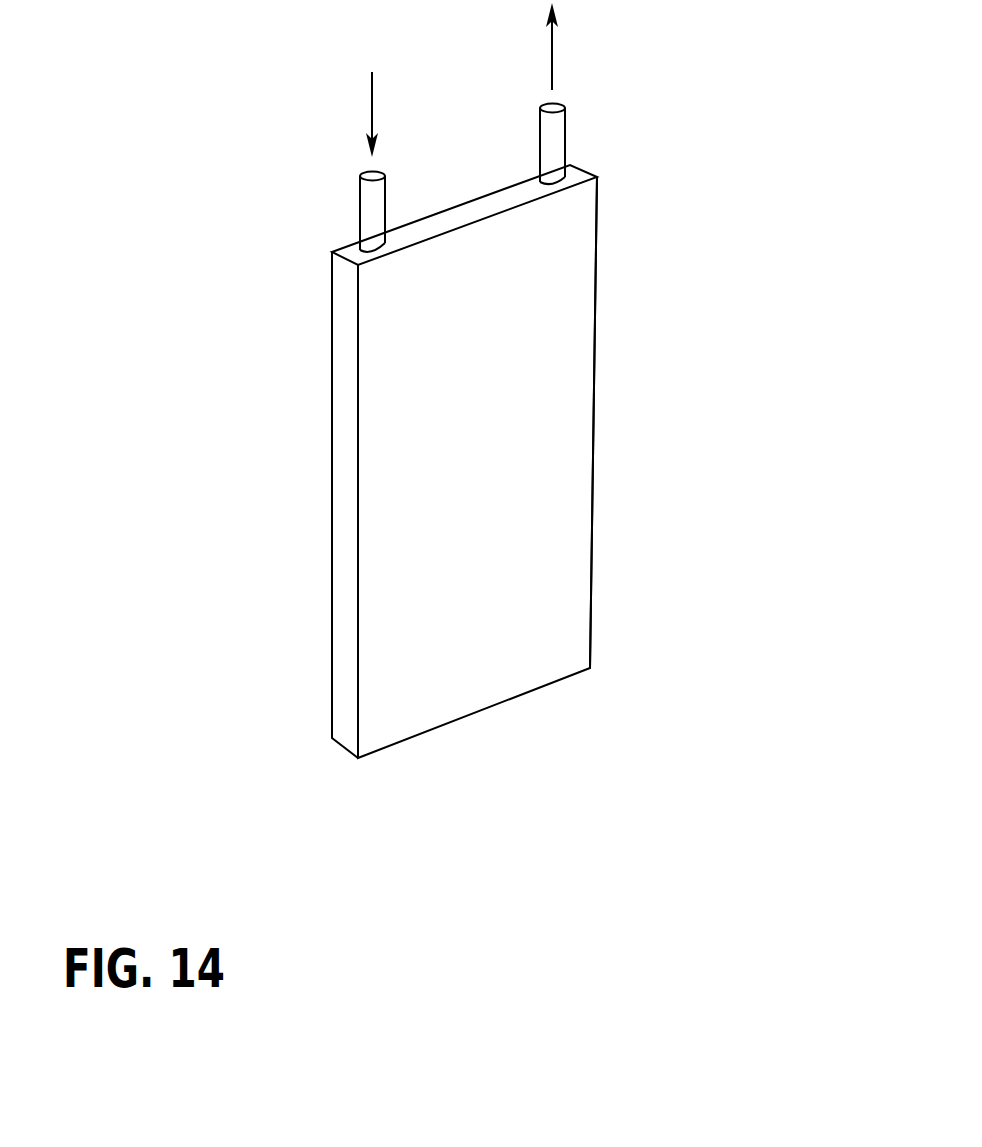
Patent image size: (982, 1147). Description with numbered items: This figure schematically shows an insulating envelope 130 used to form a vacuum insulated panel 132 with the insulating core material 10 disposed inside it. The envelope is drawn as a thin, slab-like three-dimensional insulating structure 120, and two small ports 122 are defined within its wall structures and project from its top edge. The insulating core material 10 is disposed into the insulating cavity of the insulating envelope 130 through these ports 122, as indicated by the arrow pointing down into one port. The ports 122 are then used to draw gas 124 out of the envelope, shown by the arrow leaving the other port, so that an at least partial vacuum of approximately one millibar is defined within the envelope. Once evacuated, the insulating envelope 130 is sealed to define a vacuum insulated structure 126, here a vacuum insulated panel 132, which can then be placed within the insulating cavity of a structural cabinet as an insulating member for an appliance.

The insulating core material 10 is at (372, 110).
The three-dimensional insulating structure 120 is at (575, 140).
The ports 122 is at (370, 206).
The gas 124 is at (552, 50).
The vacuum insulated structure 126 is at (318, 445).
The insulating envelope 130 is at (560, 432).
The vacuum insulated panel 132 is at (628, 342).